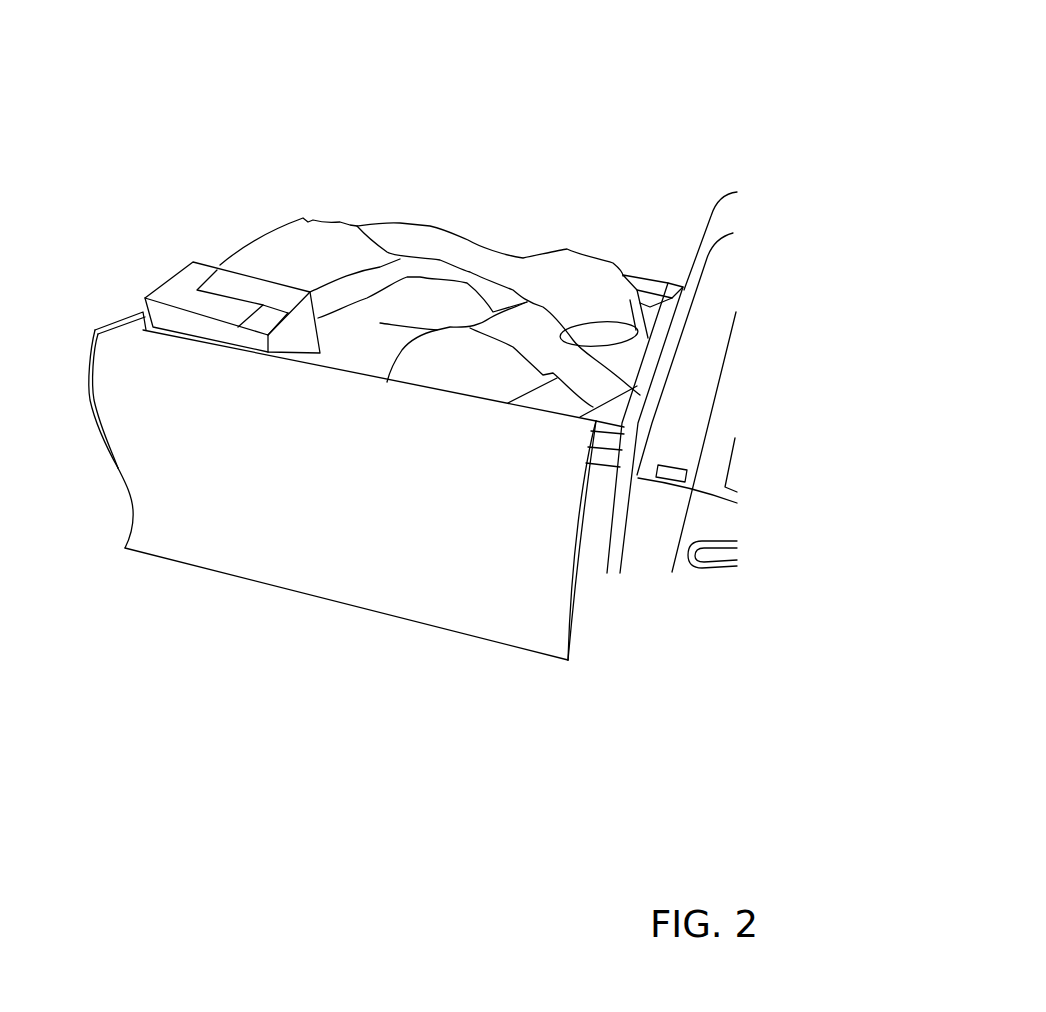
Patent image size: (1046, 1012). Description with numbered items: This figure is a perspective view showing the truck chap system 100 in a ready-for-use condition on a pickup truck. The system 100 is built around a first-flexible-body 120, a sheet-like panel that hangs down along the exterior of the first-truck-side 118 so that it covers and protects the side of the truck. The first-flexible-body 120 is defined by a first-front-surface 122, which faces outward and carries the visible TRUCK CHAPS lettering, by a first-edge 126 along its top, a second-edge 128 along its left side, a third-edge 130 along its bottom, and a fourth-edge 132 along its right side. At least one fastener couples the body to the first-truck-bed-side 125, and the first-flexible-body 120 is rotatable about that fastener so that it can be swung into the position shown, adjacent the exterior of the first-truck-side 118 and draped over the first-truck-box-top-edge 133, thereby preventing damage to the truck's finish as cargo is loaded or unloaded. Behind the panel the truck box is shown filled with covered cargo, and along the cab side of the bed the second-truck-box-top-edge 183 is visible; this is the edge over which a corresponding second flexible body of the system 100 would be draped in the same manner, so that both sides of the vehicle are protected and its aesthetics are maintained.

The truck chap system 100 is at (360, 390).
The first-truck-side 118 is at (597, 549).
The first-flexible-body 120 is at (349, 508).
The first-front-surface 122 is at (295, 564).
The first-truck-bed-side 125 is at (147, 447).
The first-edge 126 is at (138, 320).
The second-edge 128 is at (91, 403).
The third-edge 130 is at (553, 667).
The fourth-edge 132 is at (581, 630).
The first-truck-box-top-edge 133 is at (609, 454).
The second-truck-box-top-edge 183 is at (663, 279).